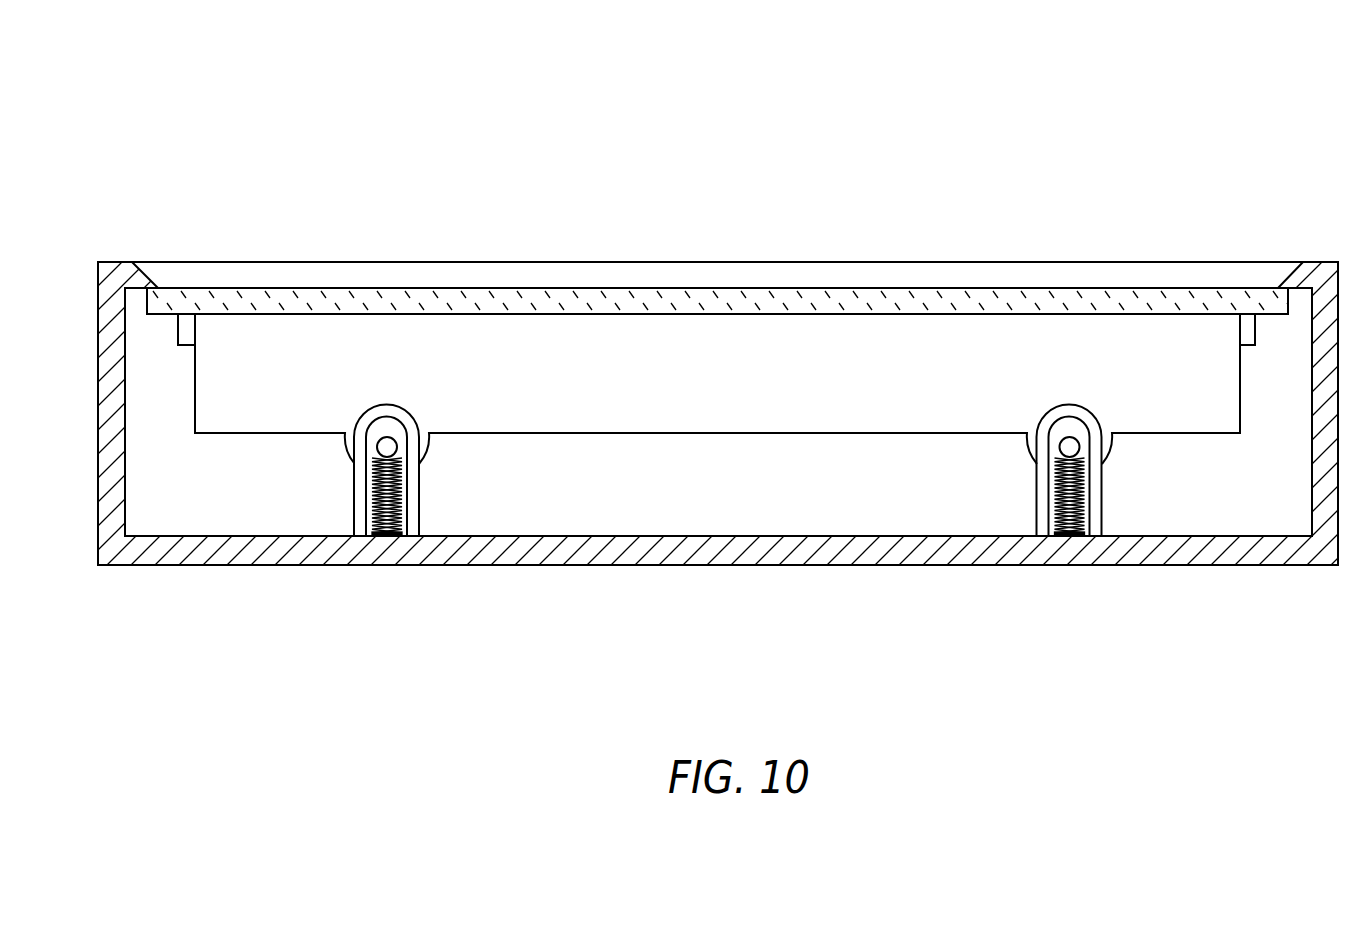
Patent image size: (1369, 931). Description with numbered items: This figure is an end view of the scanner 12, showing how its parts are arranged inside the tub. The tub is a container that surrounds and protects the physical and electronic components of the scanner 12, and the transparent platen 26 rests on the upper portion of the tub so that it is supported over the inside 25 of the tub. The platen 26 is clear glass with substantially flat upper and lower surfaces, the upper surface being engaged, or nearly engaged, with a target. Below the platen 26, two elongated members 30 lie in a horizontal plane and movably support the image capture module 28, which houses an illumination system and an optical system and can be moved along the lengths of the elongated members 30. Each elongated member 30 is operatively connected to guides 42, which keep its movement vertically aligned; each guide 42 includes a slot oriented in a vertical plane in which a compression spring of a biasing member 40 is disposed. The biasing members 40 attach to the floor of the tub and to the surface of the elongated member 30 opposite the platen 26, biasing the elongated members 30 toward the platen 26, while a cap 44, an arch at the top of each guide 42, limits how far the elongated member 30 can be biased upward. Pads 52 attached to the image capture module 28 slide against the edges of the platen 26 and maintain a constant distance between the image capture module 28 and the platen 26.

The scanner 12 is at (993, 112).
The inside of the tub 25 is at (703, 497).
The transparent platen 26 is at (398, 293).
The image capture module 28 is at (555, 338).
The elongated members 30 is at (383, 447).
The biasing members 40 is at (388, 532).
The guides 42 is at (415, 488).
The cap 44 is at (405, 405).
The pads 52 is at (187, 327).